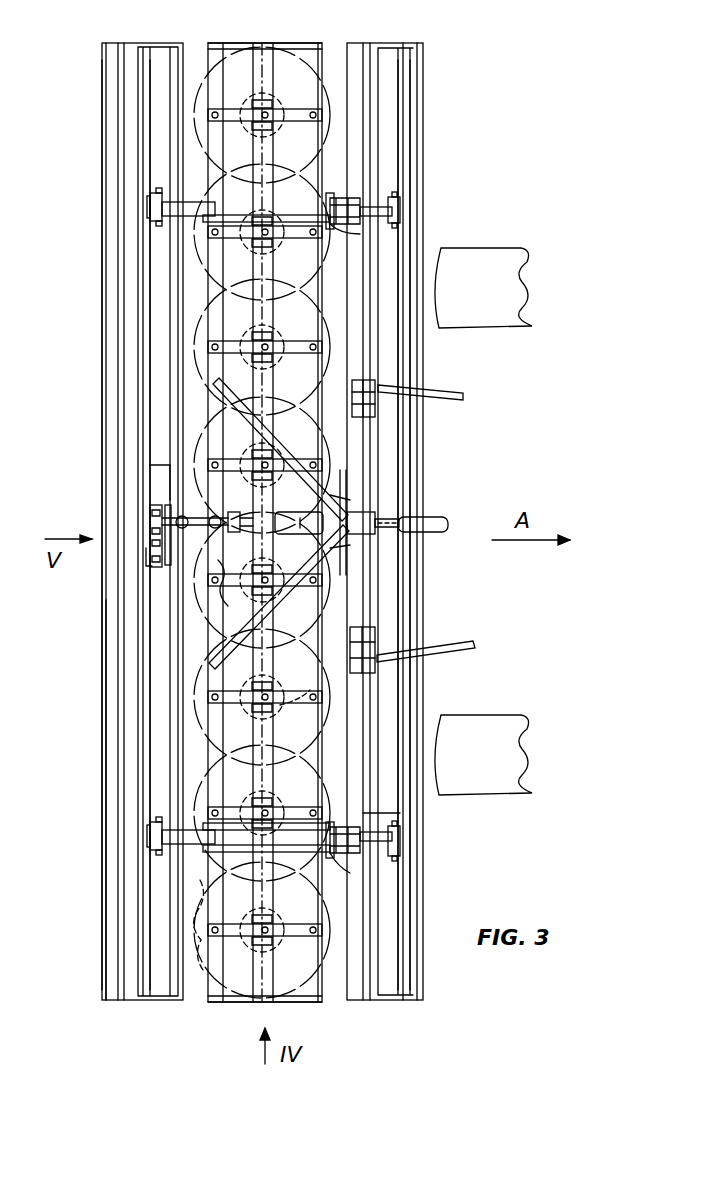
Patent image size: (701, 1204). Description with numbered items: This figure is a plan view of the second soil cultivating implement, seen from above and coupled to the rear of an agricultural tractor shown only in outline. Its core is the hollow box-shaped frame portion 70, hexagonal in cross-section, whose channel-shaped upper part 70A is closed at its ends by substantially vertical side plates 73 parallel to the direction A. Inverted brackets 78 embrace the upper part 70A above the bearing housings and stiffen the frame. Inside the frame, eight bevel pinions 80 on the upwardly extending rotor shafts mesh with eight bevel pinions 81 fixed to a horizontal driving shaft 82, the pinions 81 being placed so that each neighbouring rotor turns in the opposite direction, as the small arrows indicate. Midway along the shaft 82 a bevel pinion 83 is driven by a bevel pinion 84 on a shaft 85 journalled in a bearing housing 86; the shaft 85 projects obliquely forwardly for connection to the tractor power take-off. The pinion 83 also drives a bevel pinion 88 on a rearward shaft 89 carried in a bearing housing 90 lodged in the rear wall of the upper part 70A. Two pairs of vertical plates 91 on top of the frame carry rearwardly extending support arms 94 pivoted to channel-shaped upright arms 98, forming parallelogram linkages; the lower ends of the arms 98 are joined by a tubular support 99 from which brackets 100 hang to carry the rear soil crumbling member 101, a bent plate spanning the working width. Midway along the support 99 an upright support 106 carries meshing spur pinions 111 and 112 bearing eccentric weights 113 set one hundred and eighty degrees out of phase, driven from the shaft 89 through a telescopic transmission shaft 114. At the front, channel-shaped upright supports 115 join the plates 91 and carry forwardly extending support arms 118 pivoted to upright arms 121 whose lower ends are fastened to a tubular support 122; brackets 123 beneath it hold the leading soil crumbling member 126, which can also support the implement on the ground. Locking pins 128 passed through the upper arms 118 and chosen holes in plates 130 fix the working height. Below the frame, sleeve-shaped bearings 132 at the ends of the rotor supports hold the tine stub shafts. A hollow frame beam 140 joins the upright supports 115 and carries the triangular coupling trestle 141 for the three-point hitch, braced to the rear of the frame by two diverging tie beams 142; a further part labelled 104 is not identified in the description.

The hollow box-shaped frame portion 70 is at (236, 1010).
The upper part of the frame portion 70A is at (243, 64).
The side plates 73 is at (297, 45).
The brackets 78 is at (318, 76).
The bevel pinions 80 is at (278, 98).
The bevel pinions 81 is at (256, 134).
The driving shaft 82 is at (290, 710).
The bevel pinion 83 is at (238, 534).
The bevel pinion 84 is at (305, 482).
The shaft 85 is at (360, 464).
The bearing housing 86 is at (290, 536).
The bevel pinion 88 is at (225, 513).
The shaft 89 is at (228, 584).
The bearing housing 90 is at (184, 516).
The plates 91 is at (300, 130).
The support arms 94 is at (200, 224).
The upright arms 98 is at (150, 206).
The tubular support 99 is at (150, 355).
The brackets 100 is at (172, 42).
The rear soil crumbling member 101 is at (100, 311).
The rail side wall 104 is at (102, 686).
The upright support 106 is at (150, 468).
The pinion 111 is at (150, 521).
The pinion 112 is at (150, 507).
The eccentric weights 113 is at (150, 576).
The telescopic transmission shaft 114 is at (165, 574).
The upright supports 115 is at (360, 234).
The support arms 118 is at (382, 815).
The upright arms 121 is at (400, 213).
The tubular support 122 is at (397, 163).
The brackets 123 is at (408, 44).
The leading soil crumbling member 126 is at (412, 142).
The locking pins 128 is at (350, 200).
The plates 130 is at (355, 198).
The bearings 132 is at (206, 902).
The frame beam 140 is at (345, 612).
The coupling member or trestle 141 is at (368, 446).
The strengthening tie beams 142 is at (355, 505).